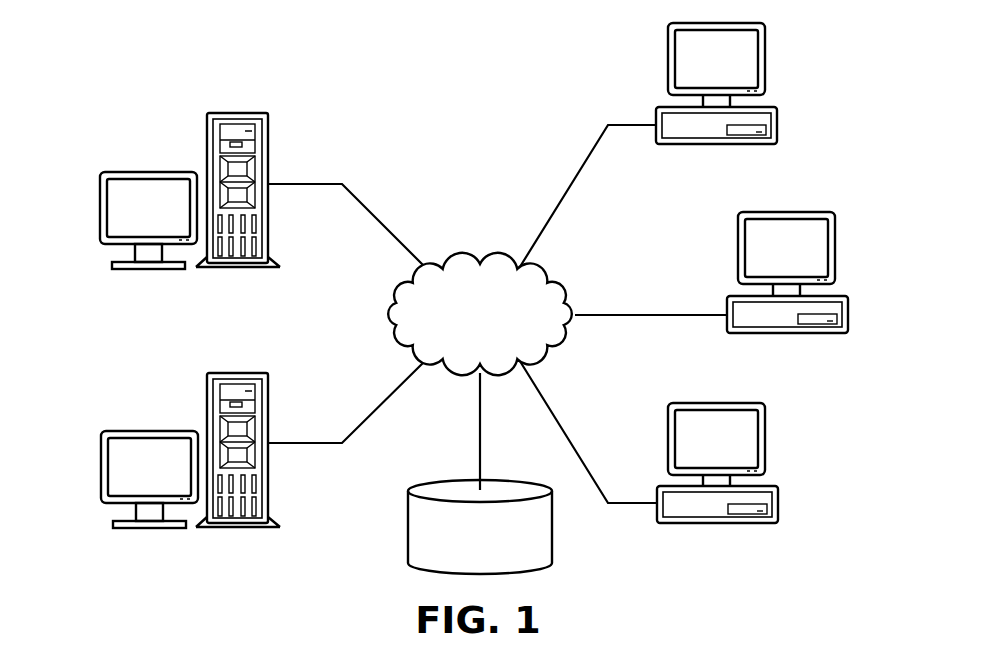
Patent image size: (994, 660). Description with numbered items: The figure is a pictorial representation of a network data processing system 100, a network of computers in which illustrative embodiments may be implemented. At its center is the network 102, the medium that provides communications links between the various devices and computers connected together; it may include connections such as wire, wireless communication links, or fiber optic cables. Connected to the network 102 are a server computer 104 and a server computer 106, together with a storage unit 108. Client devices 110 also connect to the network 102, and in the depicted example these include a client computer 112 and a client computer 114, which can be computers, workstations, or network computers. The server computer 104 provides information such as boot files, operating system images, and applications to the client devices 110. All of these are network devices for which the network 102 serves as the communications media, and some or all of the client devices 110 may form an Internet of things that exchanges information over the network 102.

The network data processing system 100 is at (393, 71).
The network 102 is at (453, 259).
The server computer 104 is at (100, 210).
The server computer 106 is at (100, 466).
The storage unit 108 is at (408, 527).
The client devices 110 is at (777, 117).
The client computer 112 is at (848, 325).
The client computer 114 is at (778, 514).